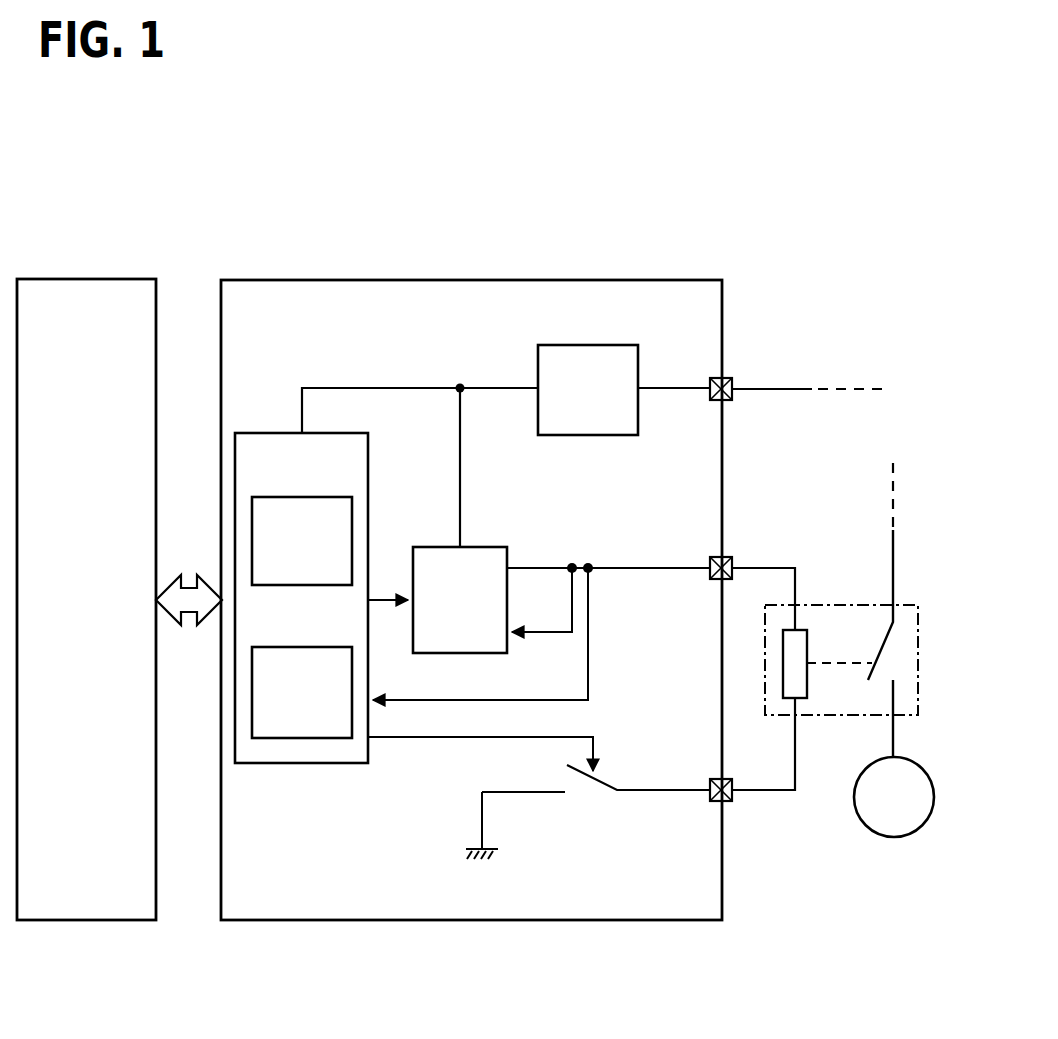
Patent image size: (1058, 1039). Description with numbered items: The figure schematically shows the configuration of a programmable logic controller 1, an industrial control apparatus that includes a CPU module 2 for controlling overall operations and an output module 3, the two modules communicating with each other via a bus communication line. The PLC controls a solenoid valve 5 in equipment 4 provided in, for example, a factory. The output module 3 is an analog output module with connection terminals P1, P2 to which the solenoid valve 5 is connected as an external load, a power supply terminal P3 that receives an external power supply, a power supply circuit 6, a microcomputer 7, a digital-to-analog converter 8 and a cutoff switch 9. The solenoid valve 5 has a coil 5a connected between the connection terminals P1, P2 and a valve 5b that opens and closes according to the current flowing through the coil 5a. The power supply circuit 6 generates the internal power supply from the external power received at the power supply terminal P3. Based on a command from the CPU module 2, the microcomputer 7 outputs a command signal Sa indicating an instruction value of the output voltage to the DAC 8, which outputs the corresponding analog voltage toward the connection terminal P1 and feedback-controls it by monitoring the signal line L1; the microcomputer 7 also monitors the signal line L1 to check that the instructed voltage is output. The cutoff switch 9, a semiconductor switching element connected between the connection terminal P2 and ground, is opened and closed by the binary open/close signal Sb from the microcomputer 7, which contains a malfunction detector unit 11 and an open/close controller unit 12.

The programmable logic controller 1 is at (575, 198).
The CPU module 2 is at (82, 279).
The output module 3 is at (468, 280).
The equipment 4 is at (890, 838).
The solenoid valve 5 is at (848, 603).
The coil 5a is at (807, 680).
The valve 5b is at (872, 652).
The power supply circuit 6 is at (588, 345).
The microcomputer 7 is at (262, 432).
The digital-to-analog converter 8 is at (460, 653).
The cutoff switch 9 is at (592, 798).
The malfunction detector unit 11 is at (288, 586).
The open/close controller unit 12 is at (317, 646).
The connection terminal P1 is at (725, 580).
The connection terminal P2 is at (725, 779).
The power supply terminal P3 is at (725, 377).
The signal line L1 is at (547, 567).
The command signal Sa is at (388, 586).
The open/close signal Sb is at (480, 740).